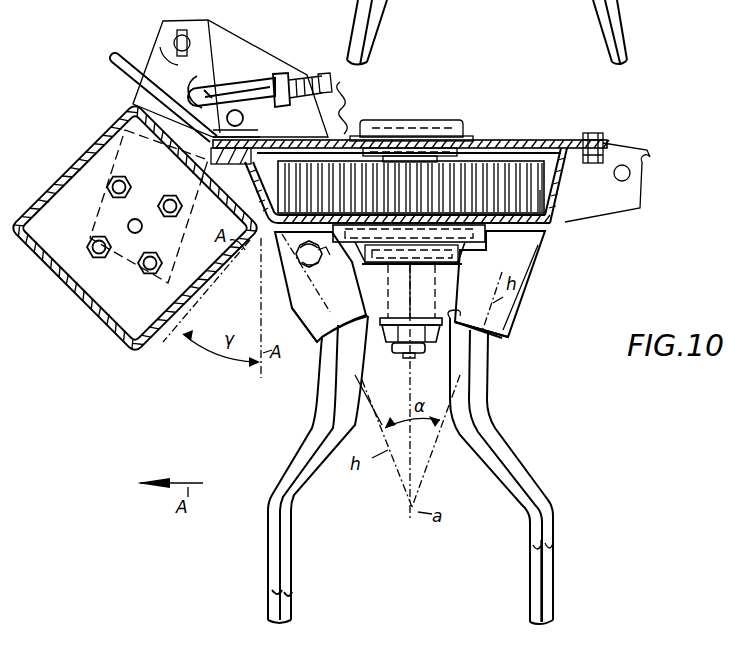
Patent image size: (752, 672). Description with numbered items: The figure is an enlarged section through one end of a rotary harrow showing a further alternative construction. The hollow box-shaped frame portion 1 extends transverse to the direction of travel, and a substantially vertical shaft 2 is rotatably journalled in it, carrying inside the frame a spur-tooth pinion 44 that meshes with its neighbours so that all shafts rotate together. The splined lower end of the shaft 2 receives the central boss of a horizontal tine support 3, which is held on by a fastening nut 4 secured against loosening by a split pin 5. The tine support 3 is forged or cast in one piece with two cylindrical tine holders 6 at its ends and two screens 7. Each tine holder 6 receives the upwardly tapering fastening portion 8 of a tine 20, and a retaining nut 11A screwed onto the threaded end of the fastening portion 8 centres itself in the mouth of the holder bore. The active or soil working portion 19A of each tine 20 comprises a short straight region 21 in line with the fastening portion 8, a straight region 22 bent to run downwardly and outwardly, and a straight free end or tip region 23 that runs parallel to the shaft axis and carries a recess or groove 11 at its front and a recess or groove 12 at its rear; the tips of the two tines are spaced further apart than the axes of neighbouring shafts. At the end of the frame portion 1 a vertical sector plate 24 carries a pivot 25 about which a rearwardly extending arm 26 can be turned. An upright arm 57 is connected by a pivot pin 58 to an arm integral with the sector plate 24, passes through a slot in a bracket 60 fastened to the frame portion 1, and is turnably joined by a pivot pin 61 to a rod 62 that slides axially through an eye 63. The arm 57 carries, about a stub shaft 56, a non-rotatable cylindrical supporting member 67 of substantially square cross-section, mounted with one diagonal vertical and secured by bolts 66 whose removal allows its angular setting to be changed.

The hollow frame portion 1 is at (578, 142).
The shaft 2 is at (420, 124).
The tine support 3 is at (437, 327).
The fastening nut 4 is at (423, 355).
The split pin 5 is at (412, 353).
The tine holder 6 is at (537, 317).
The screen 7 is at (560, 250).
The fastening portion 8 is at (312, 264).
The recess or groove 11 is at (530, 605).
The retaining nut 11A is at (327, 265).
The recess or groove 12 is at (292, 607).
The active or soil working portion 19A is at (305, 447).
The tine 20 is at (516, 424).
The short straight region 21 is at (508, 358).
The straight region 22 is at (545, 494).
The free end or tip region 23 is at (552, 548).
The sector plate 24 is at (608, 192).
The pivot 25 is at (243, 118).
The arm 26 is at (340, 98).
The pinion 44 is at (600, 196).
The stub shaft 56 is at (142, 226).
The arm 57 is at (206, 20).
The pivot pin 58 is at (172, 35).
The bracket 60 is at (112, 58).
The pivot pin 61 is at (193, 95).
The rod 62 is at (255, 84).
The eye 63 is at (278, 72).
The bolt 66 is at (140, 273).
The supporting member 67 is at (125, 347).